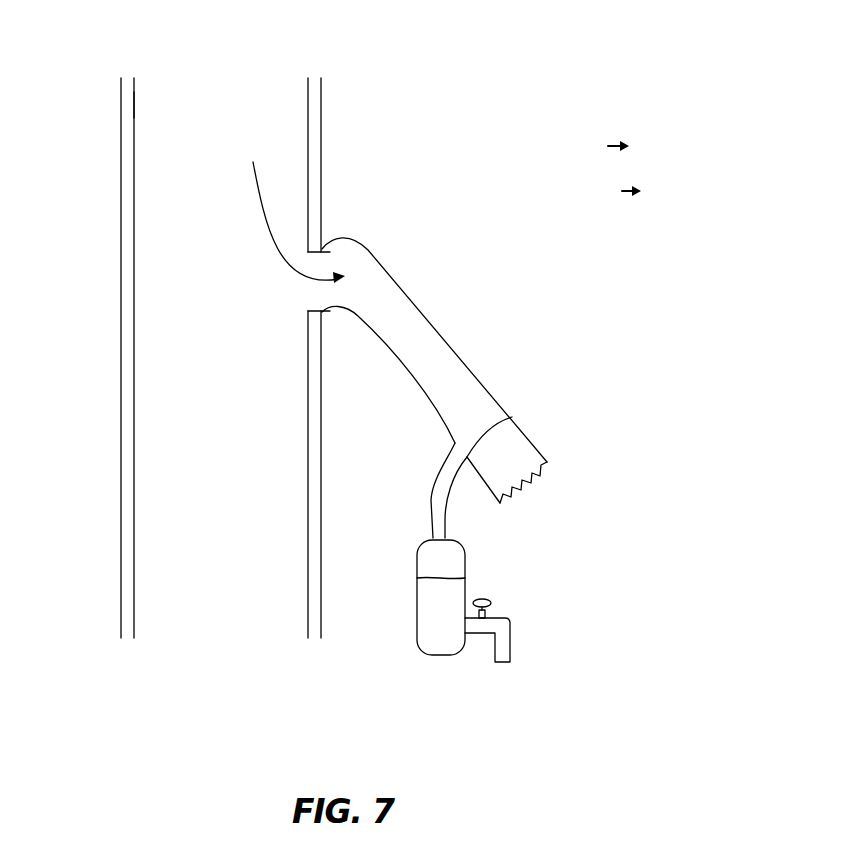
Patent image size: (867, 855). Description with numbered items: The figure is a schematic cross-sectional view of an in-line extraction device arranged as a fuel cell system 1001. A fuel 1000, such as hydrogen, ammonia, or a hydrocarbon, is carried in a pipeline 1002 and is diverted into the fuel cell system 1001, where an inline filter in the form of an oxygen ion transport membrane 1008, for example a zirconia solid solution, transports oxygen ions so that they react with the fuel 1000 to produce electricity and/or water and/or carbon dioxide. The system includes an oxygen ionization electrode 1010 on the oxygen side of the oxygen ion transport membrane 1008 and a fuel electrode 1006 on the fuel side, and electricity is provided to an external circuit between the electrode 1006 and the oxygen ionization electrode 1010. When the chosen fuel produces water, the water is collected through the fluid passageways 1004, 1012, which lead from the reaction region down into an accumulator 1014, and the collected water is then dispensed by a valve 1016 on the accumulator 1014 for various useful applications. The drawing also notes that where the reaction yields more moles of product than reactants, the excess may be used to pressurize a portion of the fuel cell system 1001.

The fuel 1000 is at (172, 207).
The fuel cell system 1001 is at (424, 76).
The pipeline 1002 is at (135, 104).
The fluid passageway 1004 is at (403, 292).
The electrode 1006 is at (506, 424).
The oxygen ion transport membrane 1008 is at (528, 440).
The oxygen ionization electrode 1010 is at (541, 461).
The fluid passageway 1012 is at (430, 500).
The accumulator 1014 is at (466, 578).
The valve 1016 is at (510, 641).